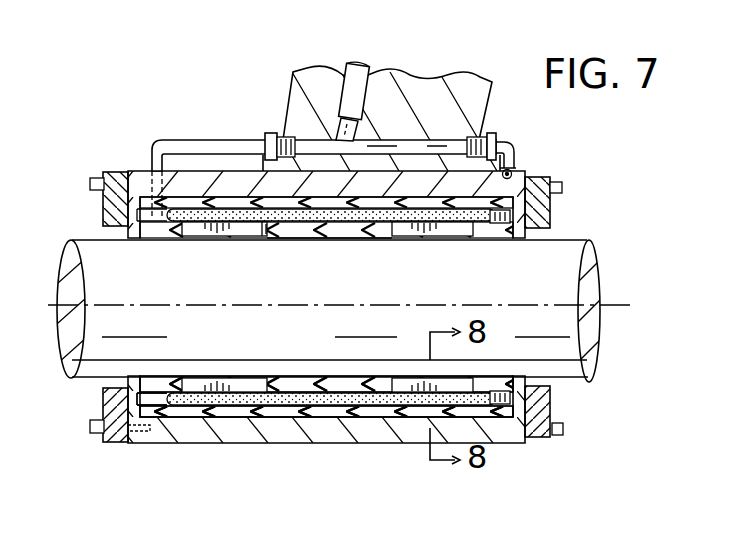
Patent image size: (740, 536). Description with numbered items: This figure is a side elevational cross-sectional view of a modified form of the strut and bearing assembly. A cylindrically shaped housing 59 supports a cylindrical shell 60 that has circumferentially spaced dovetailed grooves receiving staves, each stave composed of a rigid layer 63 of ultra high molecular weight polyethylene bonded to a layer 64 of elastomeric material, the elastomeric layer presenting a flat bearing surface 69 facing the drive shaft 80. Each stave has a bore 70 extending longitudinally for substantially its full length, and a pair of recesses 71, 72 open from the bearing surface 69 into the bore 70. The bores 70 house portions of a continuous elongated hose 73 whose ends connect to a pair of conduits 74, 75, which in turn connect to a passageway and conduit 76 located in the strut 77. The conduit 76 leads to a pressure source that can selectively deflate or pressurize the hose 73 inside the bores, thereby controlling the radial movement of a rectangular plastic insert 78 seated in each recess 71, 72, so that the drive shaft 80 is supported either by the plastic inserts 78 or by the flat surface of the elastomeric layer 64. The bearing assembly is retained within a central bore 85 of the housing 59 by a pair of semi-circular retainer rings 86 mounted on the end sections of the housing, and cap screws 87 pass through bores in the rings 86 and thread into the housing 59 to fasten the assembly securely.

The housing 59 is at (273, 447).
The cylindrical shell 60 is at (347, 200).
The rigid layer 63 is at (395, 408).
The layer of elastomeric material 64 is at (495, 238).
The flat bearing surface 69 is at (348, 387).
The bore 70 is at (347, 405).
The recess 71 is at (263, 231).
The recess 72 is at (402, 240).
The hose 73 is at (302, 393).
The conduit 74 is at (196, 143).
The conduit 75 is at (509, 150).
The conduit 76 is at (362, 60).
The strut 77 is at (432, 95).
The plastic insert 78 is at (240, 385).
The drive shaft 80 is at (587, 253).
The central bore 85 is at (197, 417).
The retainer ring 86 is at (110, 208).
The cap screw 87 is at (95, 180).